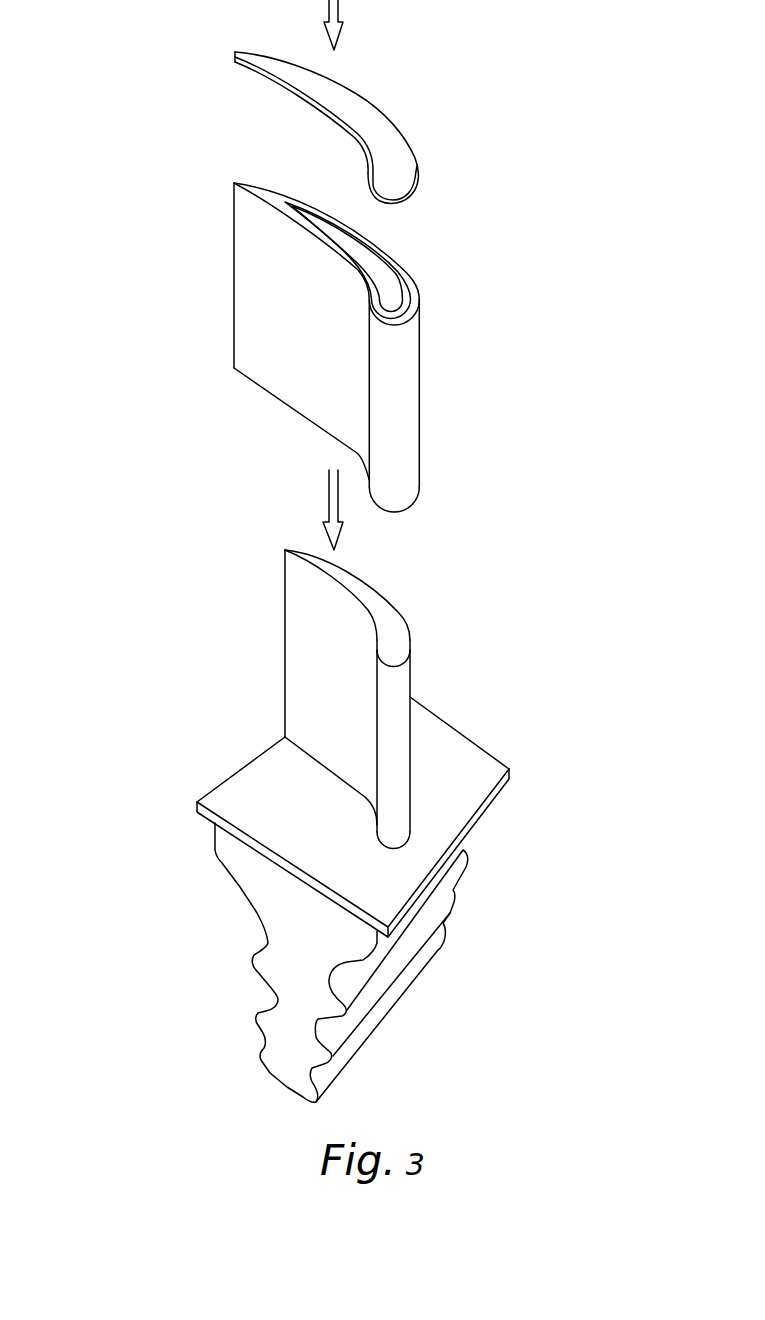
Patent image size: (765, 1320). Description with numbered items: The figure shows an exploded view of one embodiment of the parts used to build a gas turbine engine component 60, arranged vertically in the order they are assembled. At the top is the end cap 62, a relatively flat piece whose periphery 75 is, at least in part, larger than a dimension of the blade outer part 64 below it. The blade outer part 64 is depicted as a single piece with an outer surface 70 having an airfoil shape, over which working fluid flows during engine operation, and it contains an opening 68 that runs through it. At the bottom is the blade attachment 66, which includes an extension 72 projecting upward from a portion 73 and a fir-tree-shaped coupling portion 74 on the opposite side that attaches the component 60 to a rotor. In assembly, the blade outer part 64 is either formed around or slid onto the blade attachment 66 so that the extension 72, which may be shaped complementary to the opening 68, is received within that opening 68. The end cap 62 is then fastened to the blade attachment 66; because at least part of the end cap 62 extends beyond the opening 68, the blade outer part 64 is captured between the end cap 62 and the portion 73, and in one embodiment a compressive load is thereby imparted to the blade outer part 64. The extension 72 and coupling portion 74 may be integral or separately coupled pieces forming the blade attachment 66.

The gas turbine engine component 60 is at (140, 75).
The end cap 62 is at (260, 71).
The blade outer part 64 is at (234, 263).
The blade attachment 66 is at (178, 683).
The opening 68 is at (397, 302).
The outer surface 70 is at (307, 317).
The extension 72 is at (312, 655).
The portion 73 is at (246, 790).
The coupling portion 74 is at (212, 988).
The periphery 75 is at (317, 108).